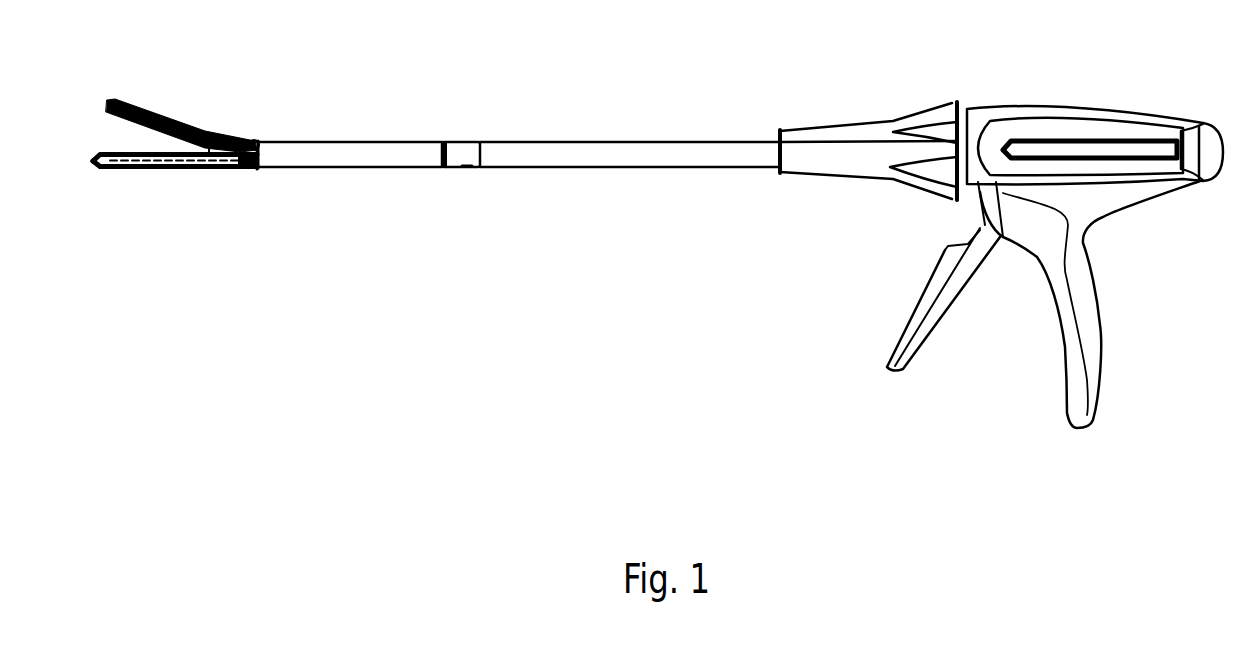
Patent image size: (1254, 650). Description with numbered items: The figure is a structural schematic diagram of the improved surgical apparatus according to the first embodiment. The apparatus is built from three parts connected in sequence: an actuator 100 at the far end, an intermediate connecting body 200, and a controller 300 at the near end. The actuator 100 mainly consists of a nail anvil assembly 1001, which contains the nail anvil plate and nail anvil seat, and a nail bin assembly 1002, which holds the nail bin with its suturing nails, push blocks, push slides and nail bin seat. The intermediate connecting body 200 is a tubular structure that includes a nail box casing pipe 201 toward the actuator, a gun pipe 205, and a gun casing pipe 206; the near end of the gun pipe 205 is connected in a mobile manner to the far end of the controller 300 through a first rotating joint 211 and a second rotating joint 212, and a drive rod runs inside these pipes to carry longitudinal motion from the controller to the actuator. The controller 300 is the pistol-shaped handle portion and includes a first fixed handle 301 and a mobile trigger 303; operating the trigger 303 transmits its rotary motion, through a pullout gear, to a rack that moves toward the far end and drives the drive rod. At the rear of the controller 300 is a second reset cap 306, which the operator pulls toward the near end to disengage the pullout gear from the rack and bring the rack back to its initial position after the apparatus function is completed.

The actuator 100 is at (176, 208).
The nail anvil assembly 1001 is at (176, 115).
The nail bin assembly 1002 is at (138, 192).
The intermediate connecting body 200 is at (607, 210).
The nail box casing pipe 201 is at (392, 170).
The gun pipe 205 is at (460, 157).
The gun casing pipe 206 is at (612, 160).
The first rotating joint 211 is at (851, 132).
The second rotating joint 212 is at (851, 167).
The controller 300 is at (1021, 267).
The first fixed handle 301 is at (1082, 337).
The mobile trigger 303 is at (940, 307).
The second reset cap 306 is at (1197, 187).